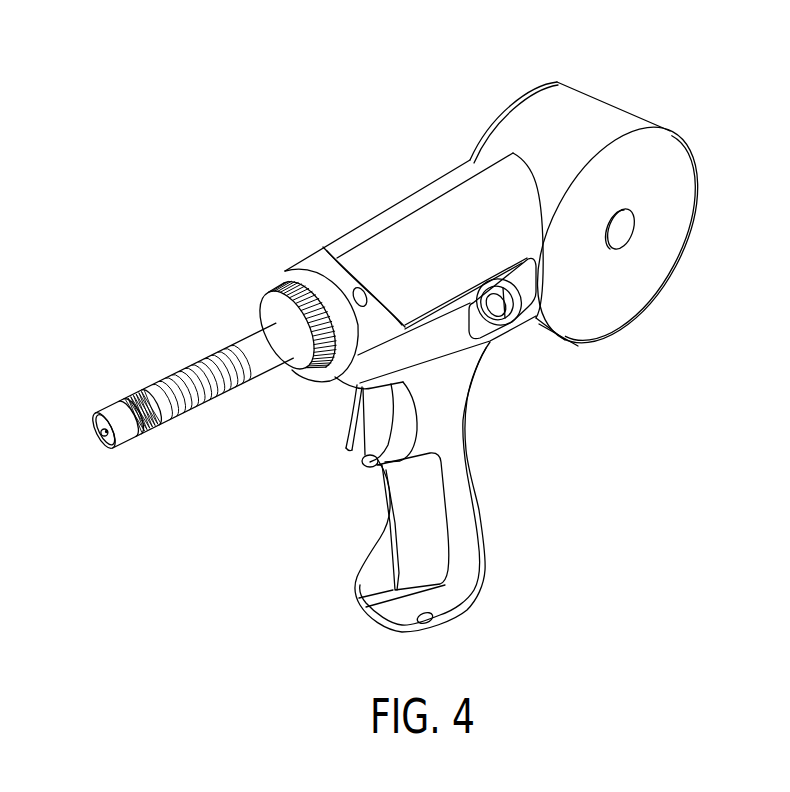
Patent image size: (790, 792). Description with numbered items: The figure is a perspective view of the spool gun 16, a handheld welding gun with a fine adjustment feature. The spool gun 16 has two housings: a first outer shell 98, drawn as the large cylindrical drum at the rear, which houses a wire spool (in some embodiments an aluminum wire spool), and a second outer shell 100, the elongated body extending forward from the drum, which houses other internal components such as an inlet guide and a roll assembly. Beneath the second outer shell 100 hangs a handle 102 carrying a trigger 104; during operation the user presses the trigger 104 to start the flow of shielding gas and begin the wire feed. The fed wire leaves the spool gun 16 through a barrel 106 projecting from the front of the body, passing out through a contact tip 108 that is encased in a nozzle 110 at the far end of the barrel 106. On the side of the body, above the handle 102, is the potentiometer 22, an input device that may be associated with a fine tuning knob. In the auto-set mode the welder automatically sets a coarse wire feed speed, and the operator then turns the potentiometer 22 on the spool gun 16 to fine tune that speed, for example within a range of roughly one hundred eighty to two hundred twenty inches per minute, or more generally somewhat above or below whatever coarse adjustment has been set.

The spool gun 16 is at (373, 147).
The potentiometer 22 is at (490, 317).
The first outer shell 98 is at (553, 80).
The second outer shell 100 is at (360, 230).
The handle 102 is at (490, 507).
The trigger 104 is at (345, 455).
The barrel 106 is at (217, 342).
The contact tip 108 is at (103, 437).
The nozzle 110 is at (106, 410).